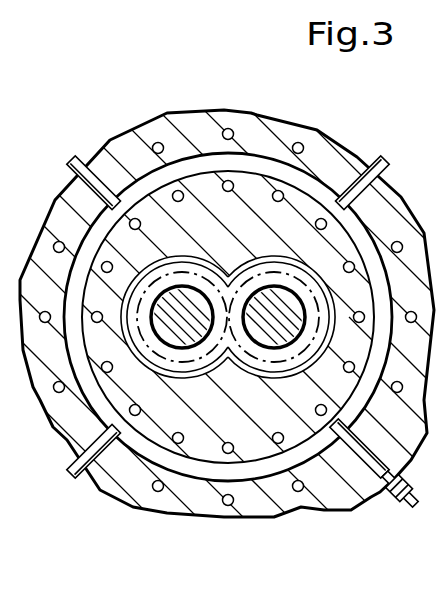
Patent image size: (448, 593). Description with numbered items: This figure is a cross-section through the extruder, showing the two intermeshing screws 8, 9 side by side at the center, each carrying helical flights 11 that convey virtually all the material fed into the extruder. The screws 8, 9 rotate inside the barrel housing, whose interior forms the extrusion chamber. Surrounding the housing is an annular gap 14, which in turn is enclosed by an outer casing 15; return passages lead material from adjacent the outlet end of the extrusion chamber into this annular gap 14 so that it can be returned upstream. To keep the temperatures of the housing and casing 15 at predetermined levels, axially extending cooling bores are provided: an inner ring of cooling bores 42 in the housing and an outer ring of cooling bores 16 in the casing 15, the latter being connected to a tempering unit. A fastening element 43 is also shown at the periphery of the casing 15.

The screw 8 is at (172, 330).
The screw 9 is at (284, 330).
The helical flights 11 is at (317, 277).
The annular gap 14 is at (271, 163).
The casing 15 is at (266, 500).
The cooling bores 16 is at (158, 142).
The cooling bores 42 is at (179, 190).
The bolt with nut 43 is at (374, 462).